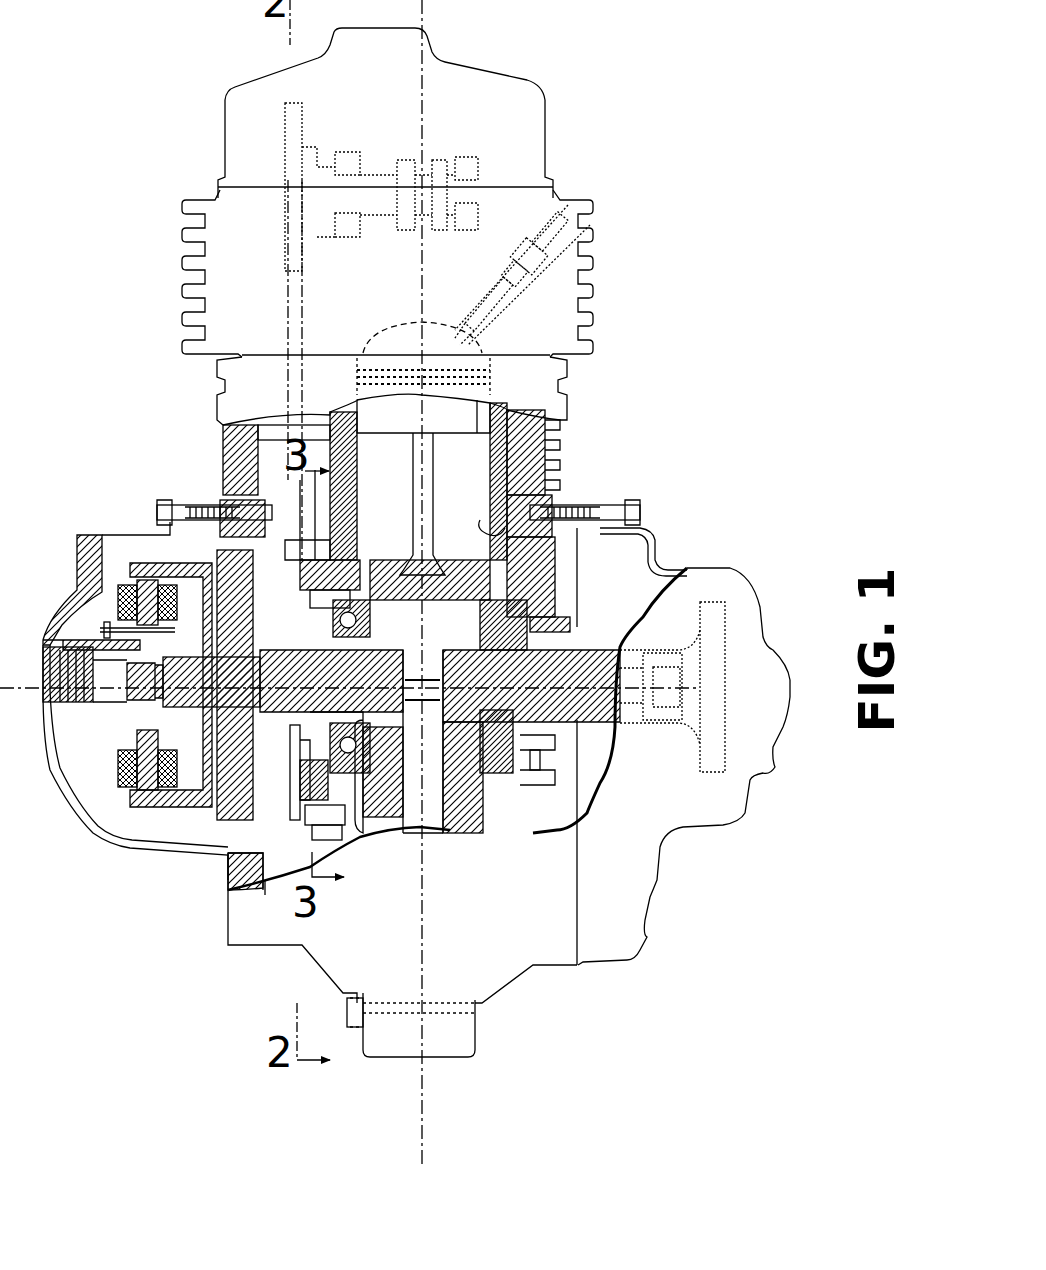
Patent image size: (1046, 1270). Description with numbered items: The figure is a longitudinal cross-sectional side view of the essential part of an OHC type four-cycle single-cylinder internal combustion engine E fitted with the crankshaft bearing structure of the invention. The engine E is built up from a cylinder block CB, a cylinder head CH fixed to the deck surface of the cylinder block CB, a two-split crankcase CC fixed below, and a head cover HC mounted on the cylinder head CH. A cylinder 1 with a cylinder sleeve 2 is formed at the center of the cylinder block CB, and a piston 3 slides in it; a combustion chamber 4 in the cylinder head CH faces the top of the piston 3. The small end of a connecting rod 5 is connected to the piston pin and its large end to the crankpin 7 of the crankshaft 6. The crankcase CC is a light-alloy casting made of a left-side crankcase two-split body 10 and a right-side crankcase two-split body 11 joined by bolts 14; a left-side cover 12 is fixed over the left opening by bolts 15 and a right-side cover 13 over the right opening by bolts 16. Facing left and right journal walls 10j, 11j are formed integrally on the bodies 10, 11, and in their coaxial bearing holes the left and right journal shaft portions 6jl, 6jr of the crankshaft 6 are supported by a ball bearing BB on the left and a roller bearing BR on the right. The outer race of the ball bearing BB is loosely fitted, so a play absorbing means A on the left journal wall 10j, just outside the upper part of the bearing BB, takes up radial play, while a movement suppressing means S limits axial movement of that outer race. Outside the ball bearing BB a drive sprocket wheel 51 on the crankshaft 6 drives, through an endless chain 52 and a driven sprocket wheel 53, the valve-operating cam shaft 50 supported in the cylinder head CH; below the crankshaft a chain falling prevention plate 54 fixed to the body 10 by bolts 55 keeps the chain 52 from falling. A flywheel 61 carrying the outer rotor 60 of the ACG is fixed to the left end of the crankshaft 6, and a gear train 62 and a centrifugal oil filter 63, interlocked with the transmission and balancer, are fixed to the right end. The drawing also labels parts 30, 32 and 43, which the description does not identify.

The cylinder 1 is at (560, 443).
The cylinder sleeve 2 is at (497, 530).
The piston 3 is at (399, 430).
The combustion chamber 4 is at (392, 327).
The connecting rod 5 is at (433, 520).
The crankshaft 6 is at (243, 667).
The crankpin 7 is at (515, 597).
The left-side crankcase two-split body 10 is at (360, 937).
The left journal wall 10j is at (348, 513).
The right-side crankcase two-split body 11 is at (483, 937).
The right journal wall 11j is at (577, 595).
The left-side cover 12 is at (160, 847).
The right-side cover 13 is at (630, 897).
The bolts 14 is at (353, 1030).
The bolts 15 is at (163, 518).
The bolts 16 is at (615, 512).
The cam chain sprocket 30 is at (355, 577).
The gear 32 is at (343, 833).
The nut 43 is at (305, 818).
The valve-operating cam shaft 50 is at (383, 173).
The drive sprocket wheel 51 is at (290, 736).
The endless chain 52 is at (282, 307).
The driven sprocket wheel 53 is at (280, 125).
The chain falling prevention plate 54 is at (297, 773).
The bolts 55 is at (263, 887).
The outer rotor of ACG 60 is at (147, 810).
The flywheel 61 is at (210, 823).
The gear train 62 is at (563, 625).
The centrifugal oil filter 63 is at (670, 733).
The play absorbing means A is at (270, 577).
The movement suppressing means S is at (305, 755).
The left-side rolling bearing BB is at (372, 743).
The right-side rolling bearing BR is at (535, 830).
The head cover HC is at (527, 95).
The internal combustion engine E is at (592, 157).
The cylinder head CH is at (573, 283).
The cylinder block CB is at (562, 388).
The crankcase CC is at (525, 982).
The left journal shaft portion 6jl is at (432, 760).
The right journal shaft portion 6jr is at (480, 800).